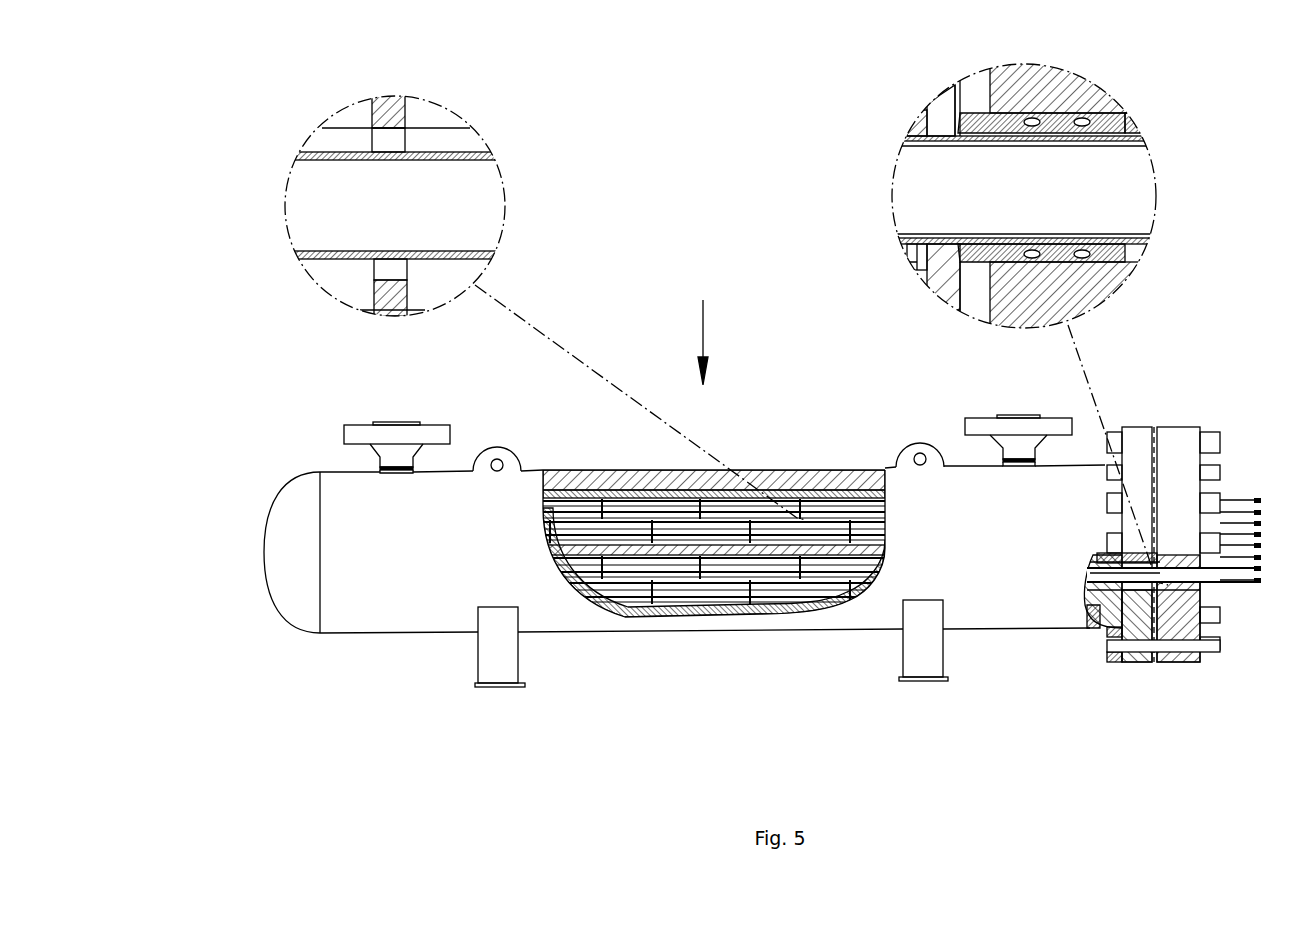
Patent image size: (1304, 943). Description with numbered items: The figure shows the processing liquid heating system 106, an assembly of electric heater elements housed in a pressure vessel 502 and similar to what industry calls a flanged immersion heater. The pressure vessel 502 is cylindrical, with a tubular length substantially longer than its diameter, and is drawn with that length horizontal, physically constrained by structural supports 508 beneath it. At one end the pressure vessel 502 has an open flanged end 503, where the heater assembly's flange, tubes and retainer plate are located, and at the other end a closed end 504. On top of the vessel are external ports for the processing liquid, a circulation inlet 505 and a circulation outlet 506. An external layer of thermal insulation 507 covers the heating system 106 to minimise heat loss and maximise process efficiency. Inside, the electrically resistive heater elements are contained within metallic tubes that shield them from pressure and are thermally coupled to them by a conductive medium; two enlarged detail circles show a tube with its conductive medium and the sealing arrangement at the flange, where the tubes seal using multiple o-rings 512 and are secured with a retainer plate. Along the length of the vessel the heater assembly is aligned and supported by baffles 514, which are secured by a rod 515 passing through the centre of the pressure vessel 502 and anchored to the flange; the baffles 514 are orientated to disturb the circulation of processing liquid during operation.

The processing liquid heating system 106 is at (703, 328).
The pressure vessel 502 is at (778, 487).
The open flanged end 503 is at (1140, 628).
The closed end 504 is at (282, 585).
The circulation inlet 505 is at (1022, 416).
The circulation outlet 506 is at (398, 423).
The thermal insulation 507 is at (330, 472).
The structural supports 508 is at (498, 688).
The o-rings 512 is at (1125, 113).
The baffles 514 is at (600, 492).
The rod 515 is at (630, 545).